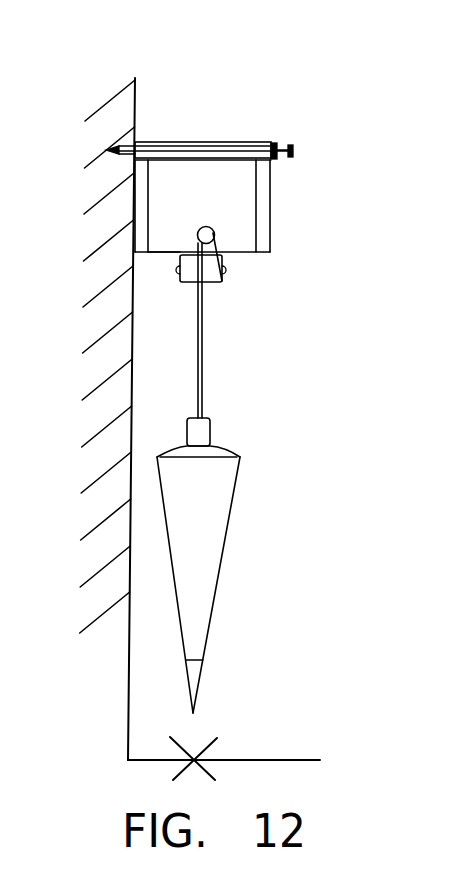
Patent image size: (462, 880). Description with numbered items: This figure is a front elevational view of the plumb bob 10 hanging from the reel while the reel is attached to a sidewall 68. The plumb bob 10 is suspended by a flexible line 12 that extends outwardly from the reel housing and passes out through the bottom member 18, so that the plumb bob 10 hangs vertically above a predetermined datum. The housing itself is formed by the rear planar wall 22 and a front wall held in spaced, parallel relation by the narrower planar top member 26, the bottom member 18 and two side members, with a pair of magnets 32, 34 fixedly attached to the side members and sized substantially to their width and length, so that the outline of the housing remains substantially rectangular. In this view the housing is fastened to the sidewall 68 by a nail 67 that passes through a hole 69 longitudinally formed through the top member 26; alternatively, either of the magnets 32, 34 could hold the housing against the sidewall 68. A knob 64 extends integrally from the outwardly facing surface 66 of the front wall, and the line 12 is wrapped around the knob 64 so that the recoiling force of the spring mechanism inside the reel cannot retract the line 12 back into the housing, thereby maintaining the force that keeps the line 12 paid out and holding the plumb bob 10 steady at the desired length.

The plumb bob 10 is at (212, 548).
The flexible line 12 is at (201, 382).
The bottom member 18 is at (163, 255).
The rear planar wall 22 is at (233, 242).
The top member 26 is at (198, 144).
The magnet 32 is at (140, 208).
The magnet 34 is at (265, 213).
The knob 64 is at (223, 260).
The outwardly facing surface 66 is at (237, 220).
The nail 67 is at (293, 150).
The sidewall 68 is at (137, 83).
The hole 69 is at (244, 147).